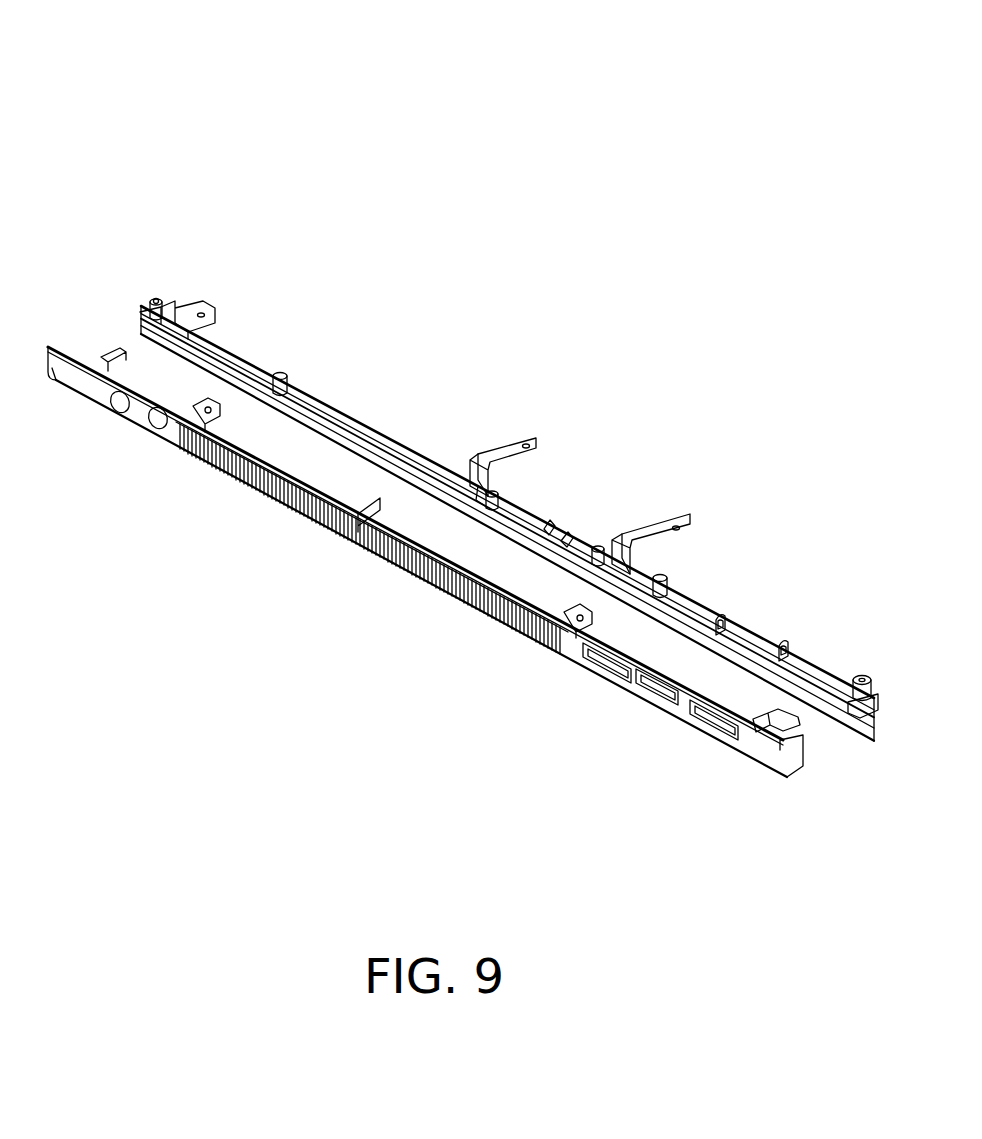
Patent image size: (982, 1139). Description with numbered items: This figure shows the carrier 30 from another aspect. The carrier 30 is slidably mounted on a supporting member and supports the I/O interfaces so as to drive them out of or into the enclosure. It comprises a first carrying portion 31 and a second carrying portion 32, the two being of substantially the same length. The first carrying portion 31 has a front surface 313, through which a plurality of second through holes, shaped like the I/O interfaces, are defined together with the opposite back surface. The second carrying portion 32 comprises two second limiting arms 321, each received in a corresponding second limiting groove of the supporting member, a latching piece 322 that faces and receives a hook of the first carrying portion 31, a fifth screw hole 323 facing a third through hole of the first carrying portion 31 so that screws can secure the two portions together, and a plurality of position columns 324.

The carrier 30 is at (493, 68).
The first carrying portion 31 is at (573, 672).
The second carrying portion 32 is at (343, 395).
The front surface 313 is at (92, 386).
The second limiting arm 321 is at (666, 541).
The latching piece 322 is at (456, 461).
The fifth screw hole 323 is at (281, 366).
The position column 324 is at (145, 294).